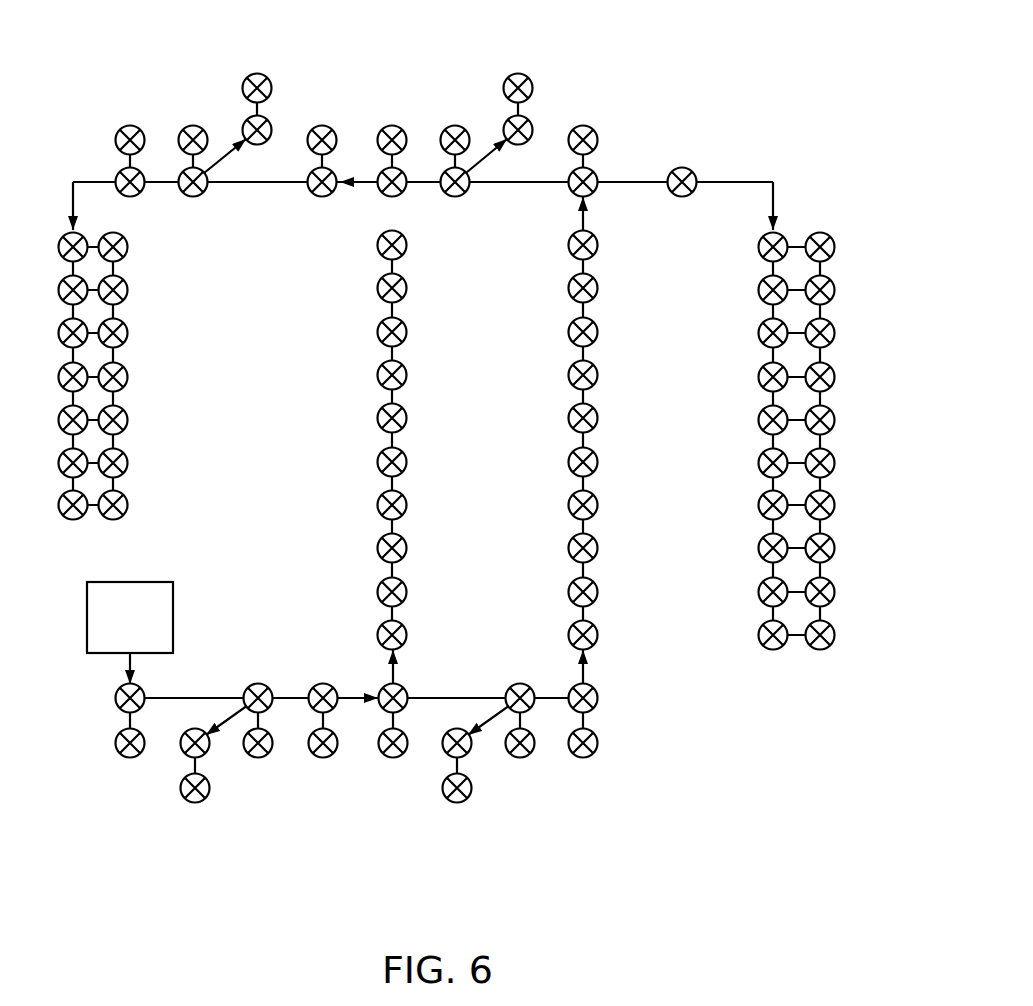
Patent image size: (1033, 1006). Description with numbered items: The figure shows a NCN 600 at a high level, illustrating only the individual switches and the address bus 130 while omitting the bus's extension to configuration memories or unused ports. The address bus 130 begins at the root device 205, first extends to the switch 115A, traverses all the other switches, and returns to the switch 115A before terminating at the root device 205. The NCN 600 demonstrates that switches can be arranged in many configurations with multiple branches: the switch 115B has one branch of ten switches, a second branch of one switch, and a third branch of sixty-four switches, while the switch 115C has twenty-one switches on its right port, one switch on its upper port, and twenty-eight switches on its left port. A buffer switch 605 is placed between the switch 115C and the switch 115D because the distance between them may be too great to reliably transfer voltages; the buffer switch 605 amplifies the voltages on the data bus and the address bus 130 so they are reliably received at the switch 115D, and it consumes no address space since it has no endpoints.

The NCN 600 is at (793, 111).
The switch 115A is at (145, 693).
The switch 115B is at (397, 684).
The switch 115C is at (570, 188).
The switch 115D is at (783, 236).
The buffer switch 605 is at (683, 198).
The root device 205 is at (118, 582).
The address bus 130 is at (120, 662).